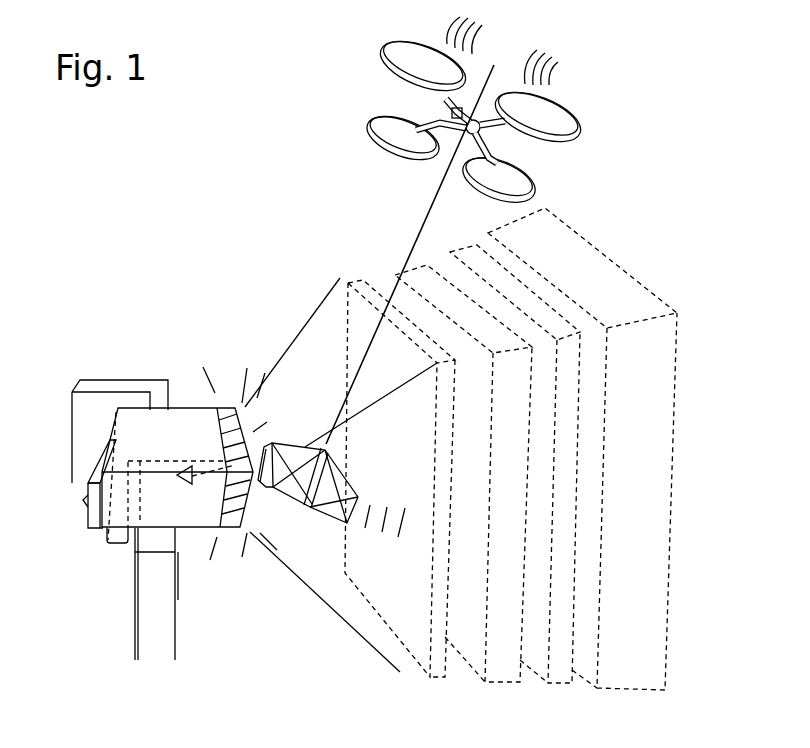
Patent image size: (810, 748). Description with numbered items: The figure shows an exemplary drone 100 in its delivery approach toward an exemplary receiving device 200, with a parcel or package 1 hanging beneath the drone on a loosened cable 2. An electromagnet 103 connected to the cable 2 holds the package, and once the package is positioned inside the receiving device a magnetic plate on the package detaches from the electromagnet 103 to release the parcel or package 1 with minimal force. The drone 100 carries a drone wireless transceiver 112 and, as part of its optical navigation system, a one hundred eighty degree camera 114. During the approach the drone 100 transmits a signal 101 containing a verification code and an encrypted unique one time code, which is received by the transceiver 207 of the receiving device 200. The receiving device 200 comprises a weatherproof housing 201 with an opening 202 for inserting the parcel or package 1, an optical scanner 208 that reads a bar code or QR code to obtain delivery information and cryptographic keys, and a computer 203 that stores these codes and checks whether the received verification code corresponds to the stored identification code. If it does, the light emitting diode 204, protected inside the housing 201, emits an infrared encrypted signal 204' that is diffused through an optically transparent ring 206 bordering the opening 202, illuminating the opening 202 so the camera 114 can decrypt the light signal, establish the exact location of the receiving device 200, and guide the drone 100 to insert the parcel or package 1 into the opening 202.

The parcel or package 1 is at (350, 623).
The cable 2 is at (430, 205).
The drone 100 is at (511, 114).
The signal 101 is at (562, 64).
The electromagnet 103 is at (323, 437).
The drone wireless transceiver 112 is at (448, 115).
The 180° camera 114 is at (512, 142).
The receiving device 200 is at (175, 282).
The housing 201 is at (188, 410).
The opening 202 is at (253, 515).
The computer 203 is at (93, 530).
The transceiver 207 is at (81, 572).
The light emitting diode 204 is at (109, 578).
The encrypted signal 204' is at (533, 434).
The optically transparent ring 206 is at (233, 527).
The optical scanner 208 is at (85, 503).